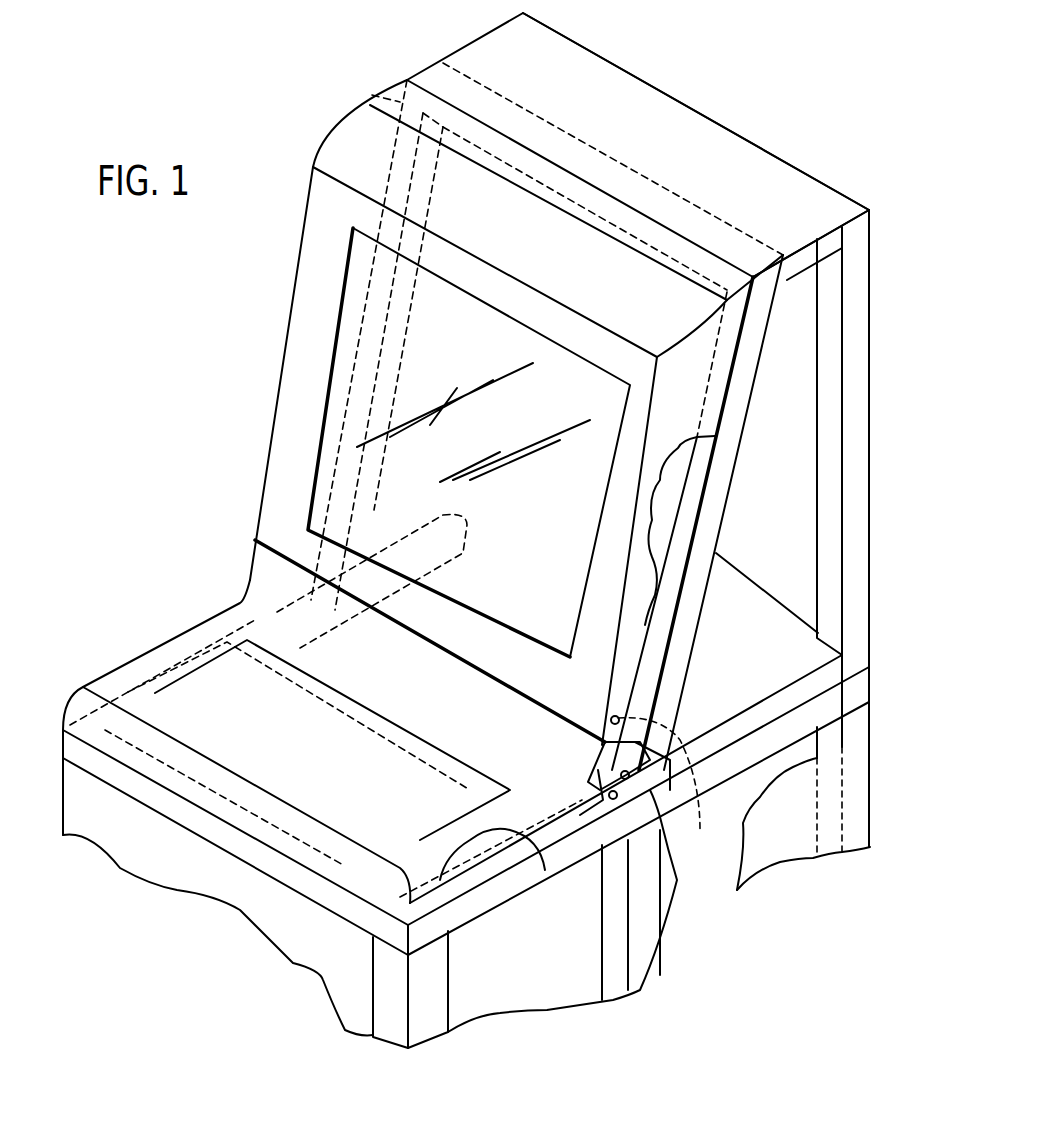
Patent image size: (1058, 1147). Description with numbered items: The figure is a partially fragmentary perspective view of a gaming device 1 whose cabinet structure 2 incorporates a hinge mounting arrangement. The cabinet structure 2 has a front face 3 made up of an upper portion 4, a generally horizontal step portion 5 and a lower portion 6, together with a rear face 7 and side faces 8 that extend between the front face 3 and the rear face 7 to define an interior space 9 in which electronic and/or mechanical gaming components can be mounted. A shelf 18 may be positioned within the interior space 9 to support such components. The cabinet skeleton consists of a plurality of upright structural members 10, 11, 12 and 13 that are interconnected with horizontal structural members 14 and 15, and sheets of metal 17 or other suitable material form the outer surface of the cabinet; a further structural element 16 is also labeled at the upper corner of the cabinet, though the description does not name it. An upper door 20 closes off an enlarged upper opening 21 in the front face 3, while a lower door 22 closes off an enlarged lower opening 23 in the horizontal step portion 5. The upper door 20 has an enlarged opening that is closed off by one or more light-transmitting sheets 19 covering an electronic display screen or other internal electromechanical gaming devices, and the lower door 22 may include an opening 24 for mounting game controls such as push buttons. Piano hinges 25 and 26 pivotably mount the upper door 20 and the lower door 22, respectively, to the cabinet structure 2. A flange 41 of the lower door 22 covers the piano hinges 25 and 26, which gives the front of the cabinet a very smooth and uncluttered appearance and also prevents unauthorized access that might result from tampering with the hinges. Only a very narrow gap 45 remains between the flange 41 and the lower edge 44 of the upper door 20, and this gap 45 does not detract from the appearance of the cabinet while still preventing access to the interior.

The gaming device 1 is at (762, 118).
The cabinet structure 2 is at (873, 287).
The front face 3 is at (295, 142).
The upper portion 4 is at (283, 262).
The horizontal step portion 5 is at (136, 637).
The lower portion 6 is at (118, 838).
The rear face 7 is at (870, 463).
The side faces 8 is at (478, 48).
The interior space 9 is at (803, 430).
The upright structural member 10 is at (380, 1018).
The upright structural member 11 is at (610, 955).
The upright structural member 12 is at (858, 720).
The upright structural member 13 is at (400, 102).
The horizontal structural member 14 is at (320, 892).
The horizontal structural member 15 is at (817, 708).
The corner post 16 is at (810, 250).
The sheets of metal 17 is at (628, 103).
The shelf 18 is at (740, 568).
The light-transmitting sheet 19 is at (428, 347).
The upper door 20 is at (290, 447).
The upper opening 21 is at (670, 490).
The lower door 22 is at (200, 692).
The lower opening 23 is at (485, 852).
The opening 24 is at (210, 640).
The piano hinge 25 is at (656, 789).
The piano hinge 26 is at (625, 775).
The flange 41 is at (245, 565).
The lower edge 44 is at (258, 566).
The gap 45 is at (258, 566).